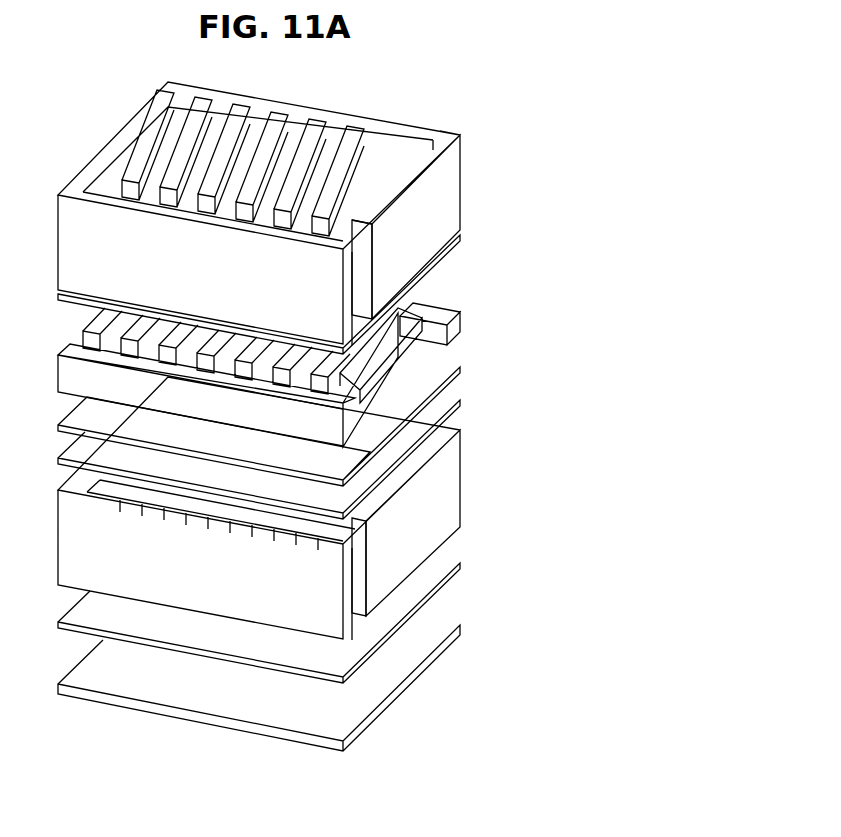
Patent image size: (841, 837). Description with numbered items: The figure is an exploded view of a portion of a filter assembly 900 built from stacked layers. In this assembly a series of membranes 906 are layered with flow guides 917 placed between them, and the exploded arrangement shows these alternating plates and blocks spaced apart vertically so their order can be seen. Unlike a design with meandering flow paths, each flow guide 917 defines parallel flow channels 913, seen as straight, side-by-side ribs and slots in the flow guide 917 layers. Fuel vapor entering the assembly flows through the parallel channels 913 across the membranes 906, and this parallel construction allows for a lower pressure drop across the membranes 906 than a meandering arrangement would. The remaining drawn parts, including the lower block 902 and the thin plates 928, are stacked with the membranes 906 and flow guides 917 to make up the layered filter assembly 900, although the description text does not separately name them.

The filter assembly 900 is at (480, 106).
The flow guide 917 is at (372, 137).
The membrane 906 is at (462, 235).
The channel plate 928 is at (462, 245).
The parallel flow channel 913 is at (357, 318).
The lower housing block 902 is at (445, 521).